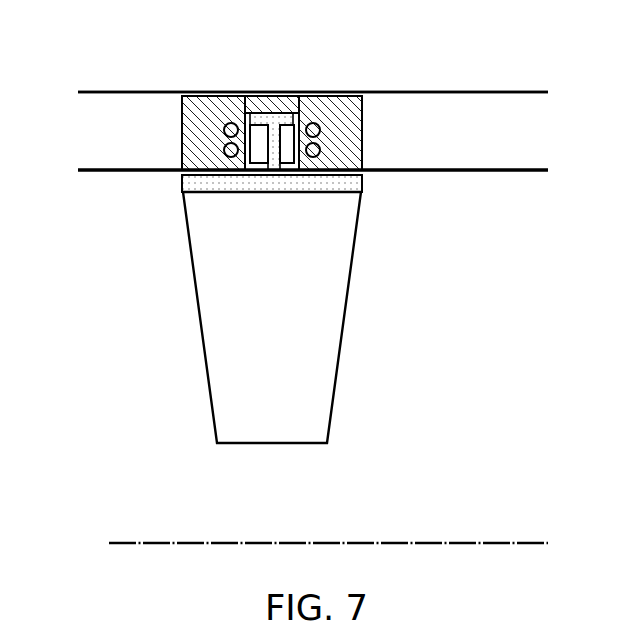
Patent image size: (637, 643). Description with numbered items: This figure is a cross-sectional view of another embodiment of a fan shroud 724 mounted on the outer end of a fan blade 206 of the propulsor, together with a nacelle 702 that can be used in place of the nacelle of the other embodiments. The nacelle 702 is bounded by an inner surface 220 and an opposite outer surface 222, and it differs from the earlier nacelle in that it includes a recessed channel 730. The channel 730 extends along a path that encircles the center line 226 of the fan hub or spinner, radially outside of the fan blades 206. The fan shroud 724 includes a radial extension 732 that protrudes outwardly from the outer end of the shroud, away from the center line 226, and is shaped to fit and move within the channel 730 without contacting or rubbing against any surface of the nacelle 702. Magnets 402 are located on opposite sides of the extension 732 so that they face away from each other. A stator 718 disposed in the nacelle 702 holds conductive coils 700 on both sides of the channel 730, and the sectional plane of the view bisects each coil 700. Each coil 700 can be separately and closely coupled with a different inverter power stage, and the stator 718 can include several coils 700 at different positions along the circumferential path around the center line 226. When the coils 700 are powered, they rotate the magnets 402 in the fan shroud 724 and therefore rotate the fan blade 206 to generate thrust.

The nacelle 702 is at (488, 116).
The outer surface 222 is at (150, 77).
The inner surface 220 is at (126, 178).
The stator 718 is at (203, 108).
The recessed channel 730 is at (258, 103).
The radial extension 732 is at (287, 118).
The magnets 402 is at (279, 176).
The conductive coils 700 is at (224, 131).
The fan shroud 724 is at (380, 186).
The fan blade 206 is at (362, 310).
The center line 226 is at (480, 540).